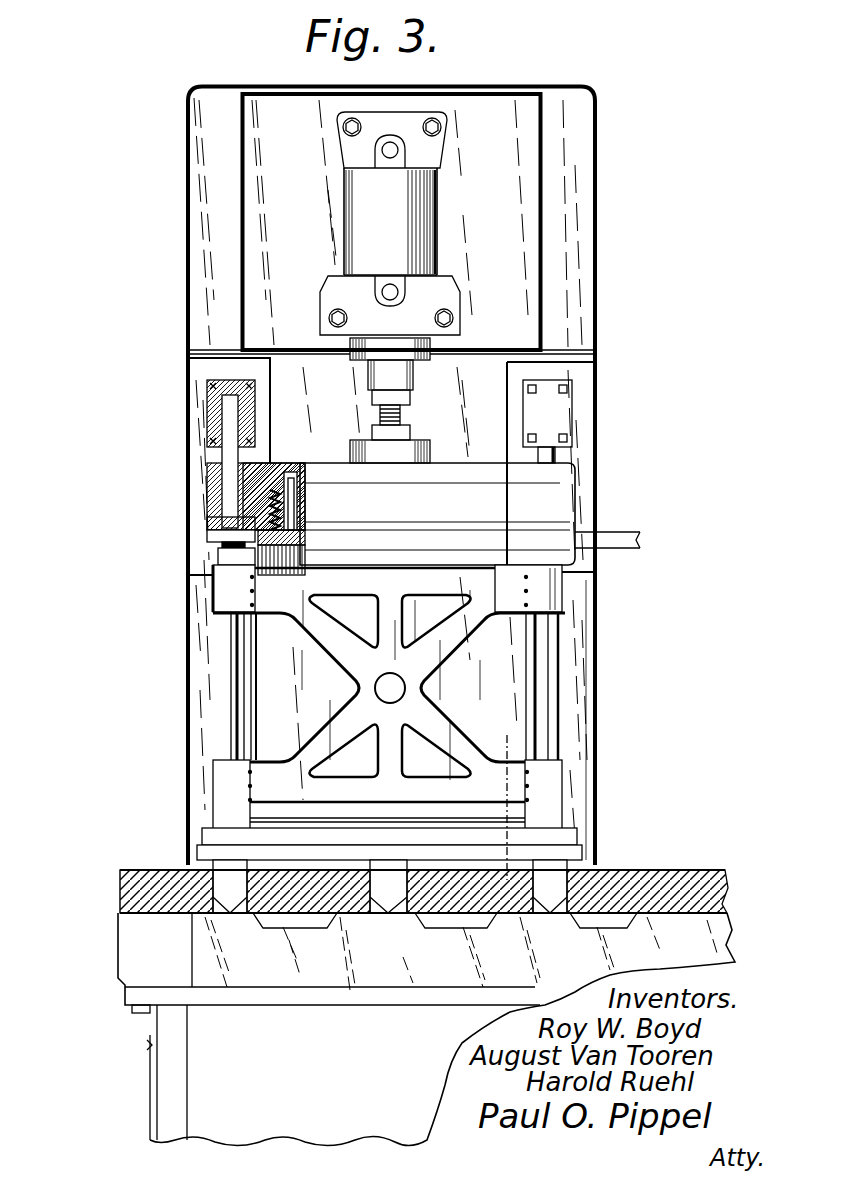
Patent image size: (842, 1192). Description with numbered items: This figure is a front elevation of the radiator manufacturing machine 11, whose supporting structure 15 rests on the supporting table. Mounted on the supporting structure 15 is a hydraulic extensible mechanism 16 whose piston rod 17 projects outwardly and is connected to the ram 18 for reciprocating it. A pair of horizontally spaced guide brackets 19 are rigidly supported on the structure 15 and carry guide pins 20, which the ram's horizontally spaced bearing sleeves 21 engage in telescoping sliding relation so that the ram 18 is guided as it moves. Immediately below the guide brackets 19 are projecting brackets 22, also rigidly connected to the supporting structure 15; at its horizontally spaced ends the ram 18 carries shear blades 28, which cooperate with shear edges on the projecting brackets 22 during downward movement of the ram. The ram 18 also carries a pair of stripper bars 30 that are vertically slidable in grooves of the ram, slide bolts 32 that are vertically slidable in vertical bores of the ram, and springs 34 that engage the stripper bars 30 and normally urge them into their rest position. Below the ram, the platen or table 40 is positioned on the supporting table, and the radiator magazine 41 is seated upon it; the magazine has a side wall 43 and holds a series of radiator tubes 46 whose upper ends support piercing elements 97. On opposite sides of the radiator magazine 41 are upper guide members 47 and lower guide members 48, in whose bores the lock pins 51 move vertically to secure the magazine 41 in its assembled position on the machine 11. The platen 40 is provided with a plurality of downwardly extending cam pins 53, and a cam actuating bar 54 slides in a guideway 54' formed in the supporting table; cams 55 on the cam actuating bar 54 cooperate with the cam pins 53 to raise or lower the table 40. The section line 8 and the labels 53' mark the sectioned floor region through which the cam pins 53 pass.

The radiator manufacturing machine 11 is at (600, 641).
The supporting structure 15 is at (188, 178).
The hydraulic extensible mechanism 16 is at (440, 193).
The piston rod 17 is at (398, 412).
The ram 18 is at (560, 502).
The guide brackets 19 is at (210, 406).
The guide pins 20 is at (240, 452).
The bearing sleeves 21 is at (210, 487).
The projecting brackets 22 is at (250, 529).
The shear blades 28 is at (255, 547).
The stripper bars 30 is at (305, 542).
The slide bolts 32 is at (300, 470).
The springs 34 is at (293, 505).
The side wall 43 is at (448, 578).
The radiator tubes 46 is at (296, 576).
The upper guide members 47 is at (213, 599).
The lower guide members 48 is at (213, 794).
The lock pins 51 is at (215, 660).
The piercing elements 97 is at (260, 553).
The section line 8- 8 is at (483, 738).
The platen or table 40 is at (570, 854).
The radiator magazine 41 is at (570, 796).
The cam pins 53 is at (409, 906).
The floor slab section 53' is at (424, 891).
The cam actuating bar 54 is at (426, 1029).
The guideway 54' is at (101, 896).
The cams 55 is at (258, 921).